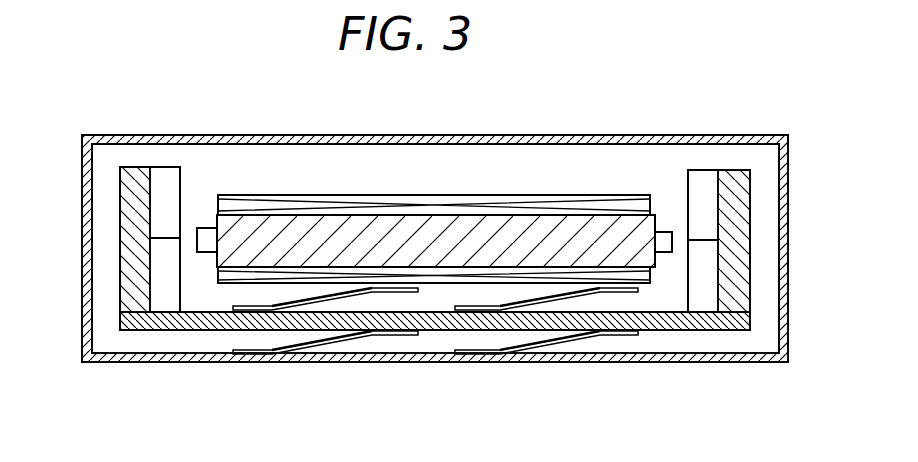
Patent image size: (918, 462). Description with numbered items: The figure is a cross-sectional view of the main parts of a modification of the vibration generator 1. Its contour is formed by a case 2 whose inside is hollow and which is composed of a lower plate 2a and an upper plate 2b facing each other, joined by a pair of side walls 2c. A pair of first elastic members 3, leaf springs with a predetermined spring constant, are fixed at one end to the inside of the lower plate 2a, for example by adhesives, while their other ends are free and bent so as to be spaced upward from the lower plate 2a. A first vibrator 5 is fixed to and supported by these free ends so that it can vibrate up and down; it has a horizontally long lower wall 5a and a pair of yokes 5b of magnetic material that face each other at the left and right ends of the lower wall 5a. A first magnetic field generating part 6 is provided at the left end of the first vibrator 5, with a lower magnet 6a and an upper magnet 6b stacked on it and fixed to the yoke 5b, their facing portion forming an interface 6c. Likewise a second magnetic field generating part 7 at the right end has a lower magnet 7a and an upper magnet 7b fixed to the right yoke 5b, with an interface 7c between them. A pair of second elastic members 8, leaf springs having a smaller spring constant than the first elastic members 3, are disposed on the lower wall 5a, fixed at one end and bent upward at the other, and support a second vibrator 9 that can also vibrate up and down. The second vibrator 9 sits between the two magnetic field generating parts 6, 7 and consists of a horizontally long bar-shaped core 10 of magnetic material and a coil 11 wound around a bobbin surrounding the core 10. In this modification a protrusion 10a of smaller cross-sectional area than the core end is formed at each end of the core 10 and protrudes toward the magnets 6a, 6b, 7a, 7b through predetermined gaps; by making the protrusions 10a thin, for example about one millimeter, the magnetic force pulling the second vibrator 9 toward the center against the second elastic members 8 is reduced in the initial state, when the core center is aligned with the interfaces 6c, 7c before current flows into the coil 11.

The vibration generator 1 is at (428, 251).
The case 2 is at (429, 253).
The lower plate 2a is at (218, 363).
The upper plate 2b is at (295, 135).
The side walls 2c is at (83, 325).
The first elastic members 3 is at (435, 364).
The first vibrator 5 is at (435, 380).
The lower wall 5a is at (510, 318).
The yokes 5b is at (128, 218).
The first magnetic field generating part 6 is at (426, 302).
The lower magnet 6a is at (160, 295).
The upper magnet 6b is at (165, 185).
The interface 6c is at (167, 242).
The second magnetic field generating part 7 is at (761, 303).
The lower magnet 7a is at (708, 297).
The upper magnet 7b is at (707, 186).
The interface 7c is at (710, 248).
The second elastic members 8 is at (328, 293).
The second vibrator 9 is at (434, 182).
The core 10 is at (429, 177).
The protrusion 10a is at (212, 230).
The coil 11 is at (432, 268).